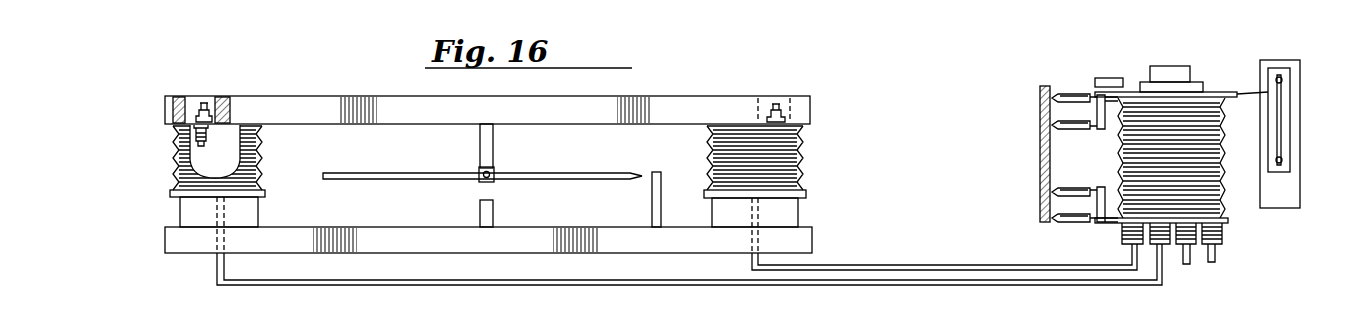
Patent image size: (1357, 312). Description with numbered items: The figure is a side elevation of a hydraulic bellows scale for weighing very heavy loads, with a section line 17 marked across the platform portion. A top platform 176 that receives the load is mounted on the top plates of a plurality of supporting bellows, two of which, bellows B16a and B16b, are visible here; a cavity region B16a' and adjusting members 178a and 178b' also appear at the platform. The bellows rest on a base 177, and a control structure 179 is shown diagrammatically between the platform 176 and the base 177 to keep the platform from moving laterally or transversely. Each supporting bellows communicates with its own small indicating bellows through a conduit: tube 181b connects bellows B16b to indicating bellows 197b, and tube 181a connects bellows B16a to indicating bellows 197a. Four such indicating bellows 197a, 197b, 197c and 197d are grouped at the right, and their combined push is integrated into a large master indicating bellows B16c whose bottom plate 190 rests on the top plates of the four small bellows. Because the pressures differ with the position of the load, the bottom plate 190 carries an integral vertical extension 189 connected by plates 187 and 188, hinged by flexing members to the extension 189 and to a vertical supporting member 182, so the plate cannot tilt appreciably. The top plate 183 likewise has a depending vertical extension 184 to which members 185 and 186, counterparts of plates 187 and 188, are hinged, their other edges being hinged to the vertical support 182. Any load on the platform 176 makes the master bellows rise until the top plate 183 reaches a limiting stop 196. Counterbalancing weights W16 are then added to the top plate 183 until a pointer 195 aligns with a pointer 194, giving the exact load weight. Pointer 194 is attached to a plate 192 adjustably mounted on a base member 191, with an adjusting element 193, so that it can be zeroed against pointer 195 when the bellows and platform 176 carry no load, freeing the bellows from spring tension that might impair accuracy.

The section line 17 is at (160, 58).
The top platform 176 is at (371, 98).
The base 177 is at (486, 247).
The adjusting screw 178a is at (210, 100).
The adjusting screw 178b' is at (755, 96).
The control structure 179 is at (518, 166).
The tube 181a is at (916, 283).
The tube 181b is at (886, 264).
The vertical supporting member 182 is at (1040, 131).
The top plate 183 is at (1127, 92).
The depending vertical extension 184 is at (1097, 110).
The member 185 is at (1043, 86).
The member 186 is at (1073, 130).
The plate 187 is at (1060, 192).
The plate 188 is at (1058, 215).
The integral vertical extension 189 is at (1098, 204).
The bottom plate 190 is at (1226, 222).
The base member 191 is at (1328, 112).
The plate 192 is at (1290, 92).
The rod 193 is at (1281, 149).
The pointer 194 is at (1258, 103).
The pointer 195 is at (1250, 97).
The limiting stop 196 is at (1110, 78).
The indicating bellows 197a is at (1150, 246).
The indicating bellows 197b is at (1124, 234).
The indicating bellows 197c is at (1196, 250).
The indicating bellows 197d is at (1224, 237).
The supporting bellows B16a is at (244, 189).
The bellows cavity B16a' is at (250, 151).
The supporting bellows B16b is at (803, 160).
The bellows B16c is at (1222, 190).
The counterbalancing weights W16 is at (1173, 70).